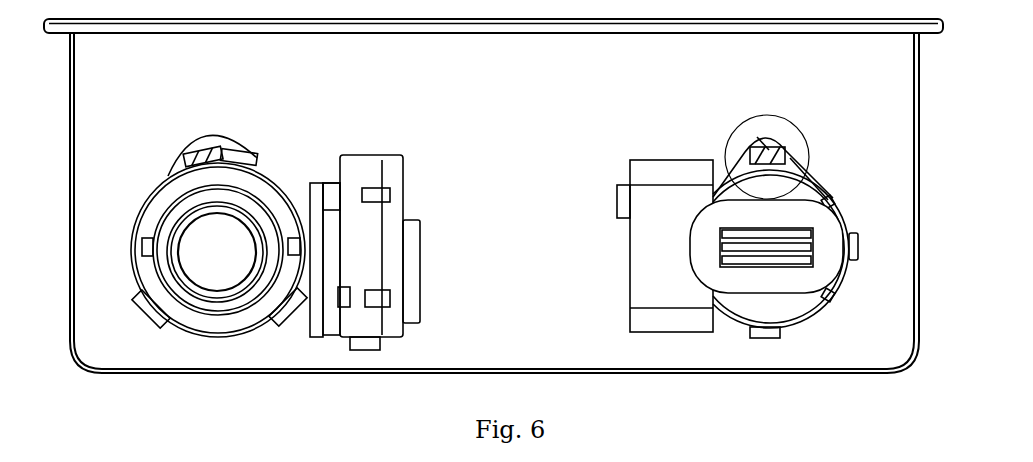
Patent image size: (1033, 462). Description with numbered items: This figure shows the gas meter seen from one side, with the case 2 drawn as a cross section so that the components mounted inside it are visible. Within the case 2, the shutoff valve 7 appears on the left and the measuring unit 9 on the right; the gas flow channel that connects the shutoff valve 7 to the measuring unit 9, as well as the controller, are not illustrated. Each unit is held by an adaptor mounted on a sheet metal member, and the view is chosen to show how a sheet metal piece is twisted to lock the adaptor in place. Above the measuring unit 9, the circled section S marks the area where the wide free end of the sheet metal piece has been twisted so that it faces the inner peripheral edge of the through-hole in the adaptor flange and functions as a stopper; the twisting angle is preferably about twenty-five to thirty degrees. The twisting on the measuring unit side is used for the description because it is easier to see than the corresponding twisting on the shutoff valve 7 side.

The case 2 is at (921, 182).
The shutoff valve 7 is at (274, 174).
The measuring unit 9 is at (667, 195).
The section S is at (784, 116).